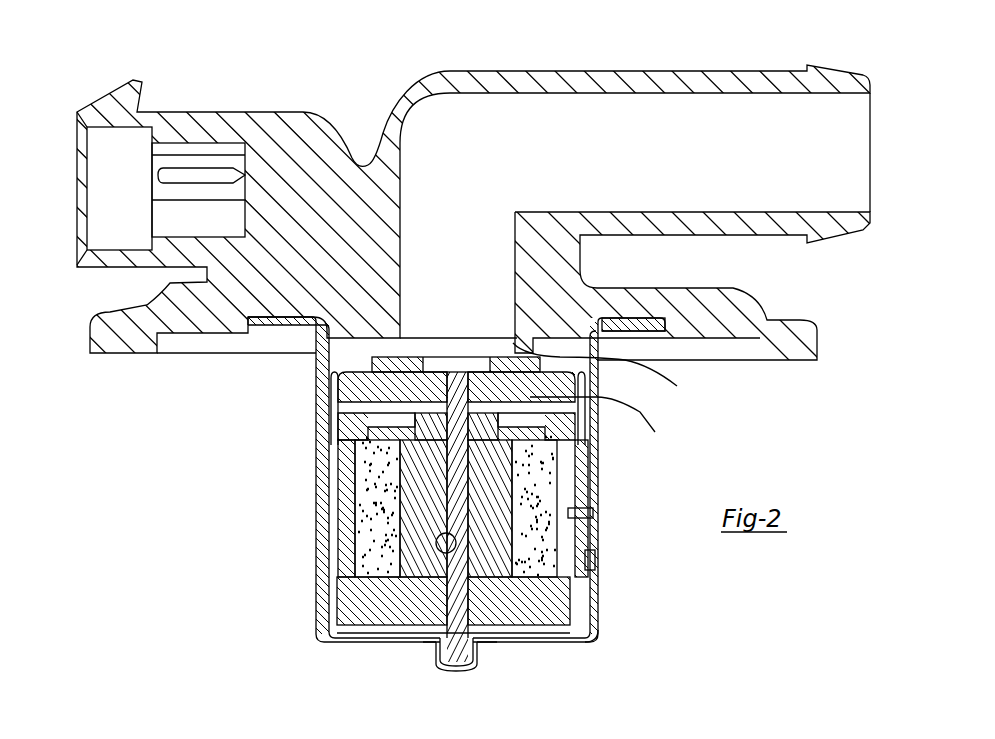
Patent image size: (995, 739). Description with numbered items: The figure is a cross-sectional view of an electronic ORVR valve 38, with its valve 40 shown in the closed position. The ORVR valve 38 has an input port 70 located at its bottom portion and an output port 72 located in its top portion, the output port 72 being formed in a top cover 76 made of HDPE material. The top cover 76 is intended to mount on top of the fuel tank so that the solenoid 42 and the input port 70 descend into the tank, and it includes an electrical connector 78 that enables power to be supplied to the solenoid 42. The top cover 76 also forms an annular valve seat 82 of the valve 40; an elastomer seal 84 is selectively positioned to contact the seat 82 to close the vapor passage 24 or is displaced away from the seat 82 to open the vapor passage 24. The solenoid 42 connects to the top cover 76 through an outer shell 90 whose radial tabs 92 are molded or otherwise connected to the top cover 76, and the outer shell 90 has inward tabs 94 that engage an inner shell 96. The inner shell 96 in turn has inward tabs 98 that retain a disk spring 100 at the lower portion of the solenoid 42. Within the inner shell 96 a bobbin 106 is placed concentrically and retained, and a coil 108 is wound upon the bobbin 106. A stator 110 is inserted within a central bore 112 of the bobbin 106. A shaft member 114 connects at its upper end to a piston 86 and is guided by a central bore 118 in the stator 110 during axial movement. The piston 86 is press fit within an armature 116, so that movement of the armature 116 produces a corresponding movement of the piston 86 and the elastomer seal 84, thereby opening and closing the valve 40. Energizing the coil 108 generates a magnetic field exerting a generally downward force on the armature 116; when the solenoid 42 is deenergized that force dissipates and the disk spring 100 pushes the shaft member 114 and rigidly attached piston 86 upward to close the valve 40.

The vapor passage 24 is at (696, 166).
The ORVR valve 38 is at (66, 100).
The valve 40 is at (152, 478).
The solenoid 42 is at (145, 601).
The input port 70 is at (308, 342).
The output port 72 is at (687, 235).
The top cover 76 is at (270, 113).
The electrical connector 78 is at (205, 150).
The annular valve seat 82 is at (607, 357).
The elastomer seal 84 is at (604, 420).
The piston 86 is at (325, 357).
The outer shell 90 is at (591, 478).
The radial tabs 92 is at (252, 353).
The inward tabs 94 is at (593, 516).
The inner shell 96 is at (596, 572).
The inward tabs 98 is at (583, 657).
The disk spring 100 is at (447, 667).
The bobbin 106 is at (350, 578).
The coil 108 is at (375, 482).
The stator 110 is at (370, 612).
The central bore 112 is at (438, 535).
The shaft member 114 is at (482, 650).
The armature 116 is at (338, 413).
The central bore 118 is at (423, 643).